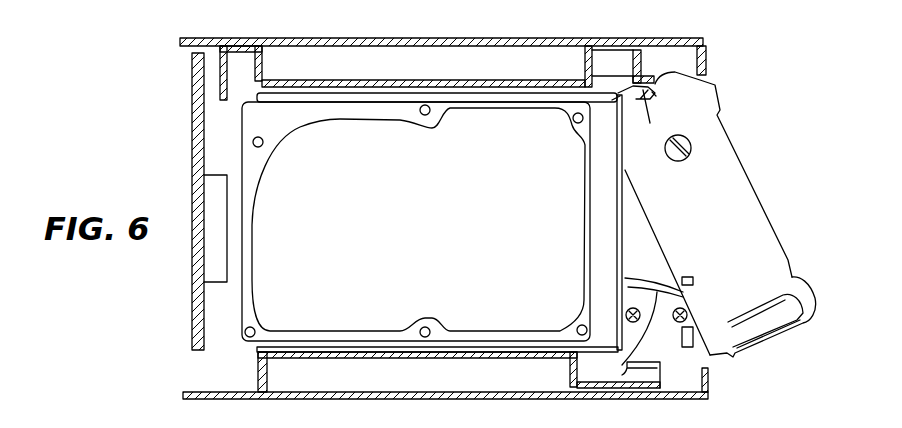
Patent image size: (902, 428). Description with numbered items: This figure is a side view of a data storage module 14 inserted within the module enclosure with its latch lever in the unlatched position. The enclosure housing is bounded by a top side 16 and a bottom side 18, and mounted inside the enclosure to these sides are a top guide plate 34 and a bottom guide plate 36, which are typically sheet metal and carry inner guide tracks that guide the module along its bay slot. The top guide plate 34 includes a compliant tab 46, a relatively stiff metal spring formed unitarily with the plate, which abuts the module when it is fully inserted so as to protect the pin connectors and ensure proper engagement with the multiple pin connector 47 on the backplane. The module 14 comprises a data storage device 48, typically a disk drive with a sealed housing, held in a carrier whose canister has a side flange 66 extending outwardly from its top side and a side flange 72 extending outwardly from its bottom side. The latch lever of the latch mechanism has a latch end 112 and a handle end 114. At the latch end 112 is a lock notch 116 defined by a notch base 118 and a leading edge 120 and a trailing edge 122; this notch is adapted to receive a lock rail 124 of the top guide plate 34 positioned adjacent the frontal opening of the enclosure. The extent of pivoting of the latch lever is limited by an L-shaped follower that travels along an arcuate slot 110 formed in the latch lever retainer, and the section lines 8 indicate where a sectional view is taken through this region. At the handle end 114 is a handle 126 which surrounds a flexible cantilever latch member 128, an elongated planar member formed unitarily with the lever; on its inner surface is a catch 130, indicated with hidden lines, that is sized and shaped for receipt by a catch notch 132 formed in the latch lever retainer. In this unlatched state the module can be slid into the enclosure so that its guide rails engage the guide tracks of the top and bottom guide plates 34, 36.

The section line 8 is at (682, 258).
The data storage module 14 is at (787, 162).
The top side 16 is at (412, 39).
The bottom side 18 is at (207, 398).
The top guide plate 34 is at (587, 55).
The bottom guide plate 36 is at (383, 354).
The compliant tab 46 is at (228, 98).
The multiple pin connector 47 is at (217, 283).
The data storage device 48 is at (332, 322).
The side flange 66 is at (342, 96).
The side flange 72 is at (452, 347).
The arcuate slot 110 is at (630, 365).
The latch end 112 is at (743, 97).
The handle end 114 is at (810, 241).
The lock notch 116 is at (632, 82).
The notch base 118 is at (653, 82).
The leading edge 120 is at (650, 100).
The trailing edge 122 is at (653, 88).
The lock rail 124 is at (655, 73).
The handle 126 is at (820, 293).
The cantilever latch member 128 is at (762, 330).
The catch 130 is at (778, 314).
The catch notch 132 is at (686, 347).